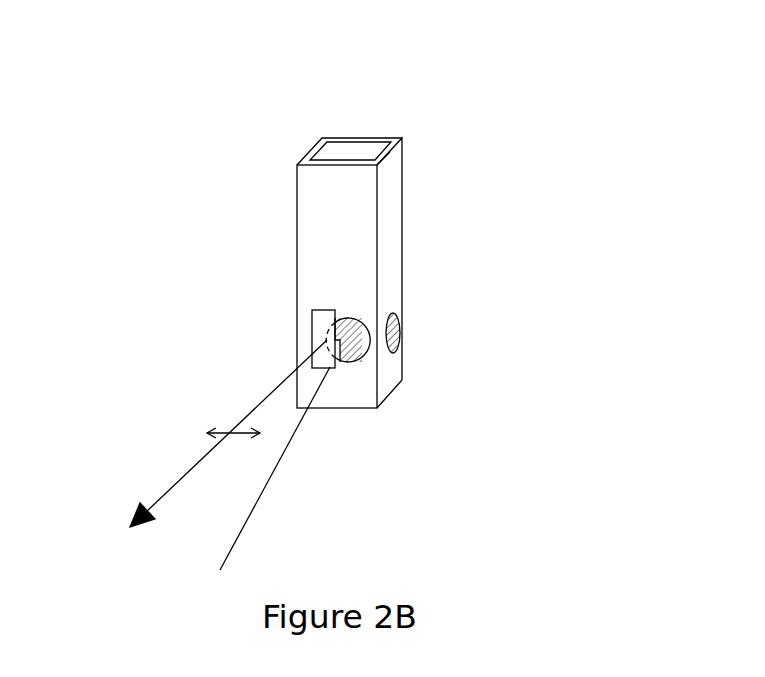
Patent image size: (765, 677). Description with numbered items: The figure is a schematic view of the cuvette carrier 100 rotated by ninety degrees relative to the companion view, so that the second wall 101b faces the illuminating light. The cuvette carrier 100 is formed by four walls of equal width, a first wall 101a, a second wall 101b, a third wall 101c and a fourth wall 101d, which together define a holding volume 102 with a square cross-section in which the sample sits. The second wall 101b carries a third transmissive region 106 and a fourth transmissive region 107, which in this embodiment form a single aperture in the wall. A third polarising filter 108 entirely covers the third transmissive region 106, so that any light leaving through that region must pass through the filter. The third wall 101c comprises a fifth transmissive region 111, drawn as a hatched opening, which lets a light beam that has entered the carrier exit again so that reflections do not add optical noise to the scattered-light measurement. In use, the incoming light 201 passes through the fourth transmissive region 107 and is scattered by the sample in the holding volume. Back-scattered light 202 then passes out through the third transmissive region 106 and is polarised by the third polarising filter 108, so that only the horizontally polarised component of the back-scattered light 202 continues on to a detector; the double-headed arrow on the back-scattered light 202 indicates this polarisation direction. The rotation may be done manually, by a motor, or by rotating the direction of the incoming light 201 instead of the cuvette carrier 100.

The cuvette carrier 100 is at (337, 230).
The first wall 101a is at (315, 150).
The second wall 101b is at (310, 275).
The third wall 101c is at (397, 242).
The fourth wall 101d is at (373, 140).
The holding volume 102 is at (386, 148).
The third transmissive region 106 is at (322, 350).
The fourth transmissive region 107 is at (352, 356).
The third polarising filter 108 is at (317, 328).
The fifth transmissive region 111 is at (400, 333).
The incoming light 201 is at (243, 524).
The back-scattered light 202 is at (181, 481).